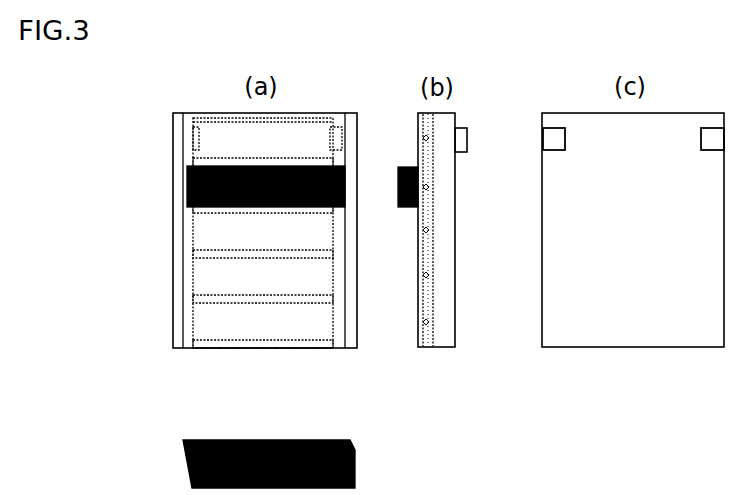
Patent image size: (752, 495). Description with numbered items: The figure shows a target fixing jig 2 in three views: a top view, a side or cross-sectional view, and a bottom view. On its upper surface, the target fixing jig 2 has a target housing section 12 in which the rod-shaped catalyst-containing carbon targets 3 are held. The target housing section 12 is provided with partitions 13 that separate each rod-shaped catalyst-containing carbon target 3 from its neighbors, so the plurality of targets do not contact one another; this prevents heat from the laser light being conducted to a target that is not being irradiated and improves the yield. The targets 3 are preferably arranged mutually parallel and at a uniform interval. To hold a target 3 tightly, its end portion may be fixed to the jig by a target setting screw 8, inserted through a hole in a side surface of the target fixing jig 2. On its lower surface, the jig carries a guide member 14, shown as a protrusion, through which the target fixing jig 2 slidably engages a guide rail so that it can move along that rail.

The target fixing jig 2 is at (308, 110).
The rod-shaped catalyst-containing carbon target 3 is at (394, 210).
The target setting screw 8 is at (440, 330).
The target housing section 12 is at (196, 318).
The partition 13 is at (204, 262).
The guide member 14 is at (536, 151).